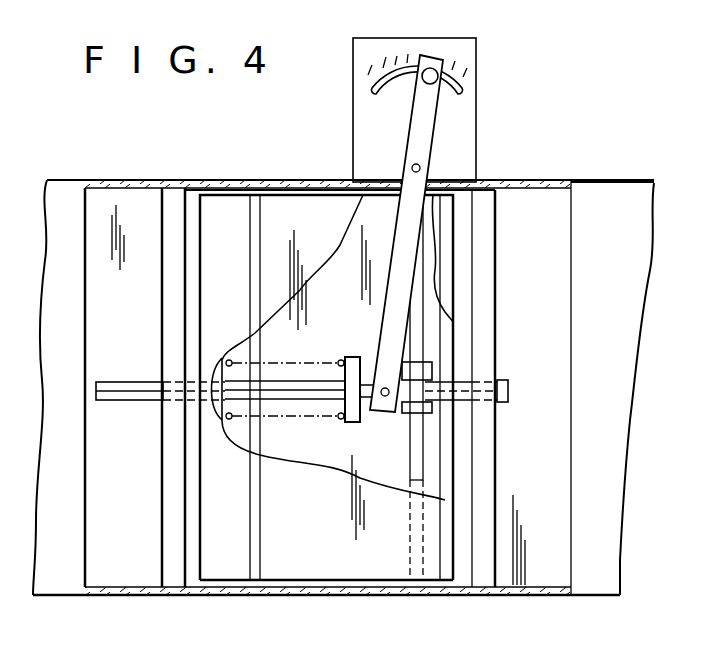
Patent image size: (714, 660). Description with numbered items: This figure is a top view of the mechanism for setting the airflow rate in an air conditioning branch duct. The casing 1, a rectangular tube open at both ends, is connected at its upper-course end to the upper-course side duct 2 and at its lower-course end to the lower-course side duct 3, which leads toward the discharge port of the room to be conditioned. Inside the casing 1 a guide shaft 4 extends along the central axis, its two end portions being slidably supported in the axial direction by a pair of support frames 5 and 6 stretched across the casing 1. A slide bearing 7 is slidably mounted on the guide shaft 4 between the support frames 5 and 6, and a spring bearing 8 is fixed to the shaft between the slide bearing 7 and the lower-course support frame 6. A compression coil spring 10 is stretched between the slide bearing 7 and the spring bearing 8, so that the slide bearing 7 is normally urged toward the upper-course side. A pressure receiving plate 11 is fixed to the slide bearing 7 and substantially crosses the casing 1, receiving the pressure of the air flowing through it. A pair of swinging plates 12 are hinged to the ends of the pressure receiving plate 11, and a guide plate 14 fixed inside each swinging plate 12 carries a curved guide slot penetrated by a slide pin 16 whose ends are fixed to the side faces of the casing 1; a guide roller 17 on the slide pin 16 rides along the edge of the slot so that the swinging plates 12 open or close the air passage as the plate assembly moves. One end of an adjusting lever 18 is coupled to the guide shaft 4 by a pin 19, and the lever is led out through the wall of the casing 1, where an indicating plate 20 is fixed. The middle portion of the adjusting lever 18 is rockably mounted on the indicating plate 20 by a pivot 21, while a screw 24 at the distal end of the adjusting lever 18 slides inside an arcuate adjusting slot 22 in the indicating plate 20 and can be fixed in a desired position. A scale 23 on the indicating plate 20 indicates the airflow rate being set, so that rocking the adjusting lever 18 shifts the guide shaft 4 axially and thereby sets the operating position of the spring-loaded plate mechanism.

The casing 1 is at (215, 186).
The upper-course side duct 2 is at (68, 182).
The lower-course side duct 3 is at (596, 181).
The guide shaft 4 is at (133, 400).
The support frame 5 is at (165, 200).
The support frame 6 is at (487, 262).
The slide bearing 7 is at (218, 358).
The spring bearing 8 is at (352, 357).
The compression coil spring 10 is at (308, 360).
The pressure receiving plate 11 is at (232, 572).
The swinging plate 12 is at (358, 575).
The guide plate 14 is at (430, 376).
The slide pin 16 is at (423, 468).
The guide roller 17 is at (432, 414).
The adjusting lever 18 is at (428, 116).
The pin 19 is at (383, 397).
The indicating plate 20 is at (464, 38).
The pivot 21 is at (421, 168).
The arcuate adjusting slot 22 is at (386, 78).
The scale 23 is at (407, 55).
The screw 24 is at (430, 67).